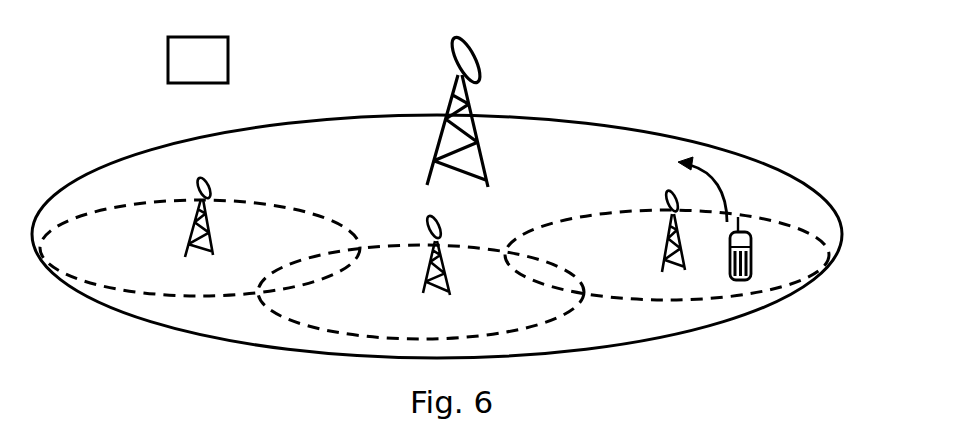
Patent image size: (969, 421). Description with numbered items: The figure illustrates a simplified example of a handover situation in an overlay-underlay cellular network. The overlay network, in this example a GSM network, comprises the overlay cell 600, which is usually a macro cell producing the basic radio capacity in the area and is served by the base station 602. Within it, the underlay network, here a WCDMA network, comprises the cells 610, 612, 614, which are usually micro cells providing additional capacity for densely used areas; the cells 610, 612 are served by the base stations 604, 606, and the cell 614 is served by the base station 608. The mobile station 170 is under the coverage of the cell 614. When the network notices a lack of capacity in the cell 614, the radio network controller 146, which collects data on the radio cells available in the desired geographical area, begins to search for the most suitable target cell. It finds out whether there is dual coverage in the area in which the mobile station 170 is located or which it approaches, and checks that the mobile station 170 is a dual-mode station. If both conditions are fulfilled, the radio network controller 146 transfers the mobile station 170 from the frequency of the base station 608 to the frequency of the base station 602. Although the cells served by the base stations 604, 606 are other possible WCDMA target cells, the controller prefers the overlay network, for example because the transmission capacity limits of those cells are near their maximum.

The radio network controller 146 is at (228, 57).
The overlay cell 600 is at (605, 122).
The base station 602 is at (443, 128).
The base station 604 is at (193, 229).
The base station 606 is at (447, 265).
The base station 608 is at (682, 242).
The underlay cell 610 is at (337, 222).
The underlay cell 612 is at (455, 243).
The underlay cell 614 is at (607, 210).
The mobile station 170 is at (752, 262).